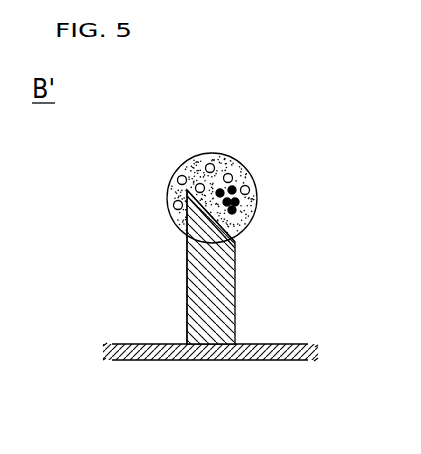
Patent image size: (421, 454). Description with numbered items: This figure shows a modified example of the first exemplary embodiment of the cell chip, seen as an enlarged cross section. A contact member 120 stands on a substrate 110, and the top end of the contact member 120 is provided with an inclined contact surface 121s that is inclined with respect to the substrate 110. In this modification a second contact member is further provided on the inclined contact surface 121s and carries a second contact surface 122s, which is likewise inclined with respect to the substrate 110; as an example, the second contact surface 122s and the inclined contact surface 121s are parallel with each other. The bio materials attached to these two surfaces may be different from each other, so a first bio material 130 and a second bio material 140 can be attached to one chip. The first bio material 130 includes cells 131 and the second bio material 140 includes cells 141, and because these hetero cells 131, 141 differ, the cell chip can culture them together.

The substrate 110 is at (215, 360).
The contact member 120 is at (266, 300).
The inclined contact surface 121s is at (243, 232).
The second contact surface 122s is at (168, 222).
The first bio material 130 is at (243, 175).
The cells 131 is at (211, 164).
The second bio material 140 is at (252, 205).
The cells 141 is at (253, 188).